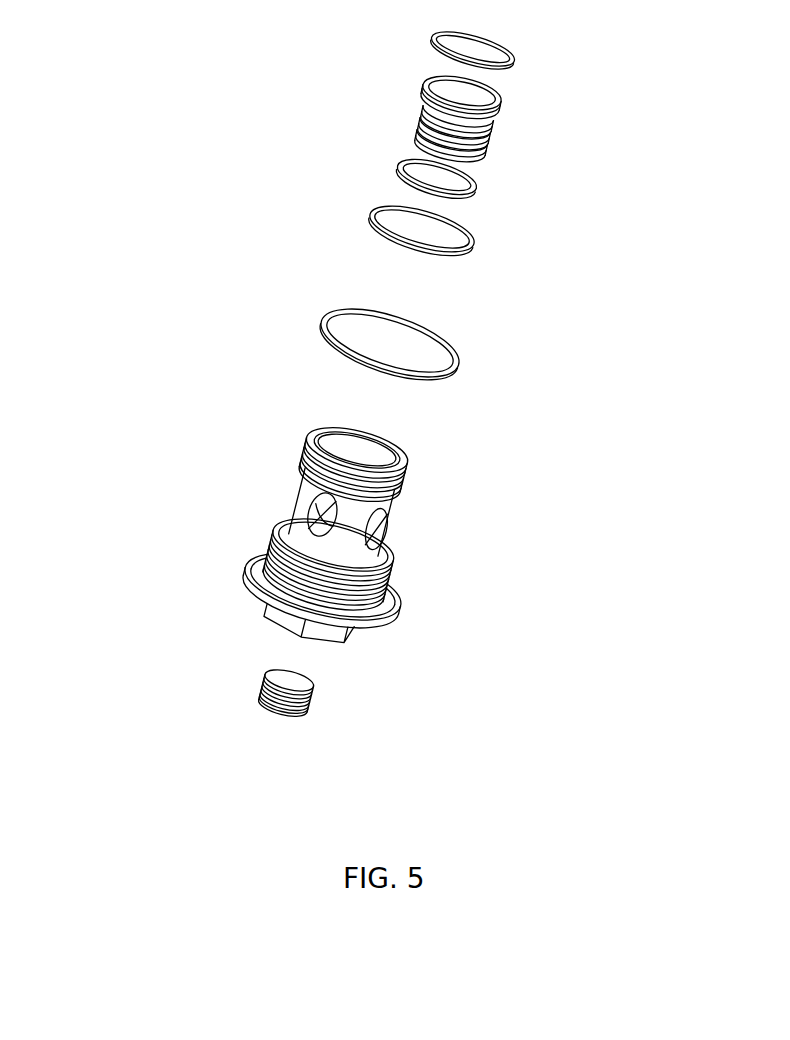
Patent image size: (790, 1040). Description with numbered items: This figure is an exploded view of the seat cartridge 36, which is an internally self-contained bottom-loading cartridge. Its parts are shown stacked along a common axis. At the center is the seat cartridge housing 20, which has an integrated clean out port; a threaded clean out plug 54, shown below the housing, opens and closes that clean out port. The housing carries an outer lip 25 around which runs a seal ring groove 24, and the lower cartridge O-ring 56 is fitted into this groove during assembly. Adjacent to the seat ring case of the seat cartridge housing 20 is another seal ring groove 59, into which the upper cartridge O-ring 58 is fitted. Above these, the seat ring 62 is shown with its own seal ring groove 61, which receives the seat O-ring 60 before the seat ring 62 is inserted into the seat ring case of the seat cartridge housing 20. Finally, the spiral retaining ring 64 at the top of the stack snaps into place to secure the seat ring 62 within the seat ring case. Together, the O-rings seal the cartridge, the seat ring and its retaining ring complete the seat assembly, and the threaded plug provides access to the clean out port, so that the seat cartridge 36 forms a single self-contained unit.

The seat cartridge 36 is at (193, 322).
The seat cartridge housing 20 is at (425, 573).
The seal ring groove 24 is at (263, 550).
The outer lip 25 is at (400, 607).
The threaded clean out plug 54 is at (310, 712).
The lower cartridge O-ring 56 is at (443, 373).
The upper cartridge O-ring 58 is at (467, 257).
The seal ring groove 59 is at (405, 475).
The seat O-ring 60 is at (470, 196).
The seal ring groove 61 is at (487, 143).
The seat ring 62 is at (492, 120).
The spiral retaining ring 64 is at (517, 63).